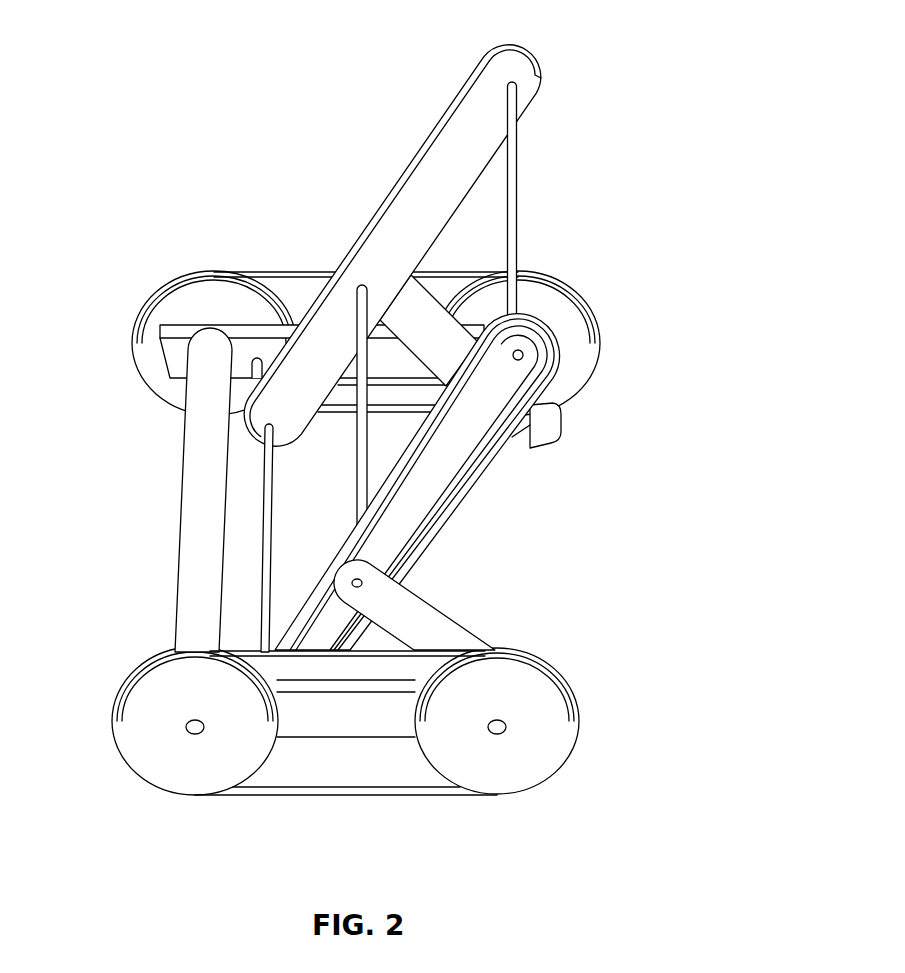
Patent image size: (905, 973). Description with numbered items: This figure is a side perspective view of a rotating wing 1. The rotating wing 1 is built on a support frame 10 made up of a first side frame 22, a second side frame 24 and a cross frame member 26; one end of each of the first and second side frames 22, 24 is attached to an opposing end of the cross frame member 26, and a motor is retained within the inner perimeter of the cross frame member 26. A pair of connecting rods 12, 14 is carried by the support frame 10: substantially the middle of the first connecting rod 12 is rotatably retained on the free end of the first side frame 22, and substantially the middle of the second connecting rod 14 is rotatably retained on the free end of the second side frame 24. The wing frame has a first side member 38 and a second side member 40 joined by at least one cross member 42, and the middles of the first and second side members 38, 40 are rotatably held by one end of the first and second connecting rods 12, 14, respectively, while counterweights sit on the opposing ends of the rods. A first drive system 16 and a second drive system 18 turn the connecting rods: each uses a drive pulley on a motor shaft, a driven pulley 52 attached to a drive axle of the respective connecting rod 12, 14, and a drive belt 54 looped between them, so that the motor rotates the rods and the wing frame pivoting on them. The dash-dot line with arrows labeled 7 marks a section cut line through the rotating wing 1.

The rotating wing 1 is at (584, 158).
The section line 7- 7 is at (195, 727).
The support frame 10 is at (113, 616).
The first connecting rod 12 is at (456, 626).
The second connecting rod 14 is at (437, 268).
The first drive system 16 is at (152, 797).
The second drive system 18 is at (223, 265).
The first side frame 22 is at (350, 730).
The second side frame 24 is at (378, 358).
The cross frame member 26 is at (186, 510).
The first side member 38 is at (449, 520).
The second side member 40 is at (513, 42).
The cross member 42 is at (517, 220).
The driven pulley 52 is at (590, 320).
The drive belt 54 is at (292, 272).